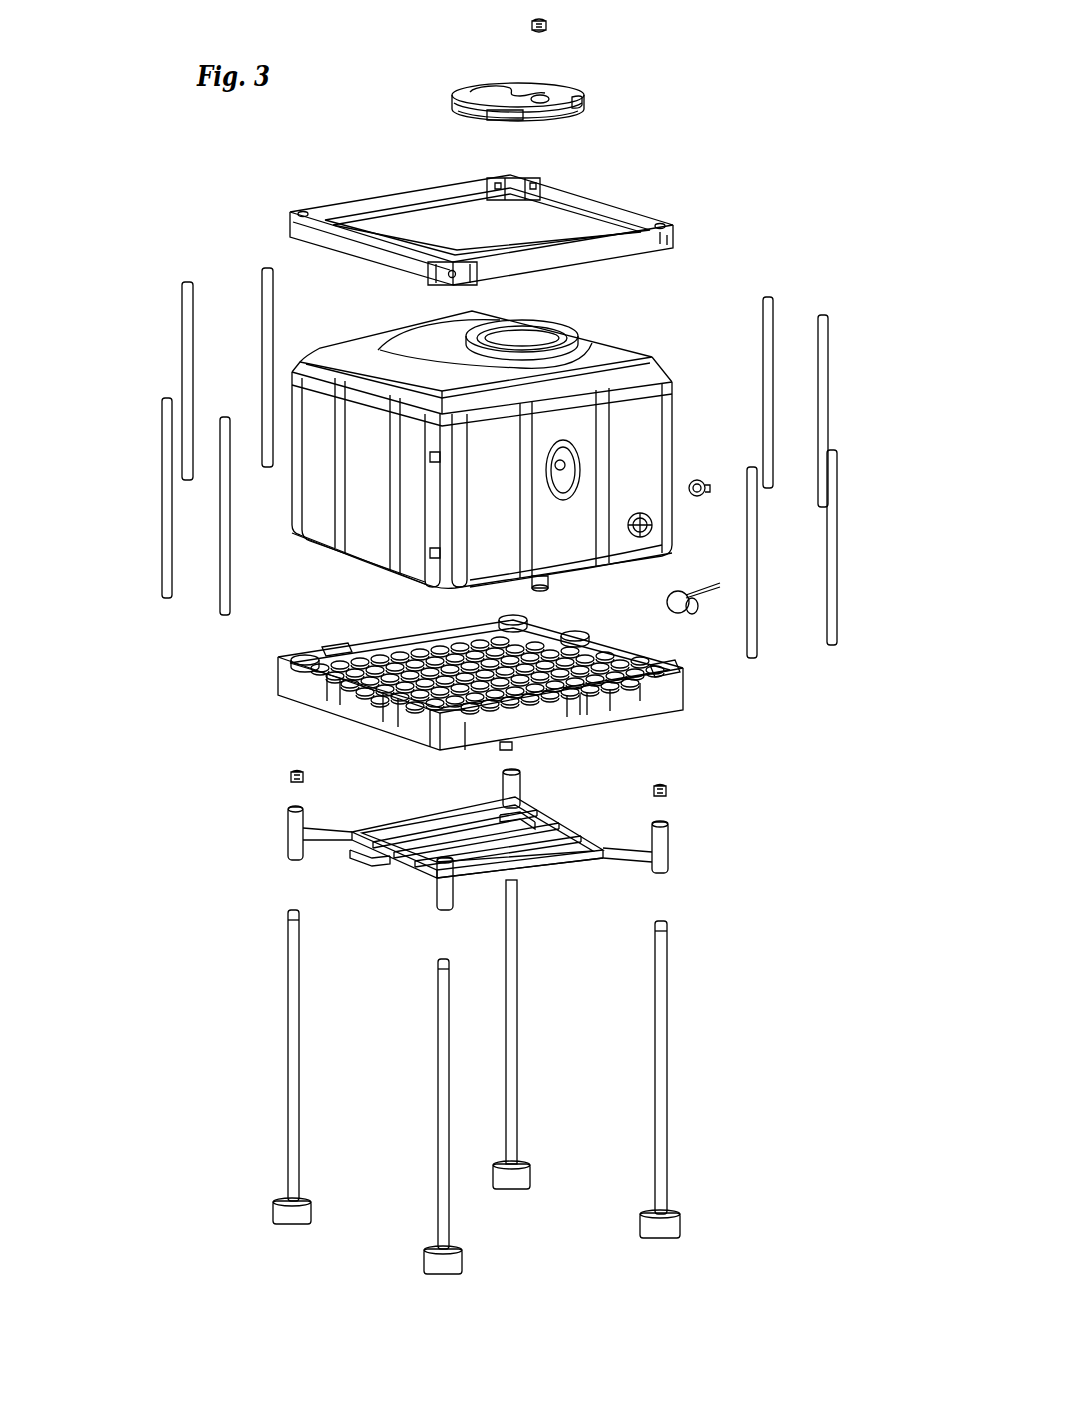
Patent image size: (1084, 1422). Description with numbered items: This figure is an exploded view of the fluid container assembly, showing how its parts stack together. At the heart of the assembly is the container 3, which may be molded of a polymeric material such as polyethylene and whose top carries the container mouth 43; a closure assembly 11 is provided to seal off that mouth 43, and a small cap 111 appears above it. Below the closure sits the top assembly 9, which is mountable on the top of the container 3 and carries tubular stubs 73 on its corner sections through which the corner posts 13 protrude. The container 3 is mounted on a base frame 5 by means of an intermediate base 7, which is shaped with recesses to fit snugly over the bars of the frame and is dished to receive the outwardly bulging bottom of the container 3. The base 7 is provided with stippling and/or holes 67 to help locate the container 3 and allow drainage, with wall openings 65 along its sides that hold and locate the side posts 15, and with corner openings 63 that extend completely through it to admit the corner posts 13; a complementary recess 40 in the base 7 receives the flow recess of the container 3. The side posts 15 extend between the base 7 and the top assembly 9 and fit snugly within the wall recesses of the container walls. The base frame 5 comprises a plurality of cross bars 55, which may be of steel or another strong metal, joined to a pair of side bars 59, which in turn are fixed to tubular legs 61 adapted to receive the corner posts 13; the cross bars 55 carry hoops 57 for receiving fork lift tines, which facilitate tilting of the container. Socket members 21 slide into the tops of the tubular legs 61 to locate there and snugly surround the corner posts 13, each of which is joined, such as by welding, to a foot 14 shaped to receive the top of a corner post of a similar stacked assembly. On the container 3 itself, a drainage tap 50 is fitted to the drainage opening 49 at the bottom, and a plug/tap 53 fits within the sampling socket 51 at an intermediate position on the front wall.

The cap nut 111 is at (548, 25).
The closure assembly 11 is at (582, 105).
The tubular stubs 73 is at (508, 199).
The top assembly 9 is at (618, 207).
The side posts 15 is at (182, 327).
The container mouth 43 is at (560, 322).
The container 3 is at (608, 450).
The sampling socket 51 is at (563, 466).
The plug/tap 53 is at (708, 492).
The drainage opening 49 is at (548, 578).
The drainage tap 50 is at (700, 612).
The base 7 is at (475, 669).
The corner openings 63 is at (510, 617).
The stippling and/or holes 67 is at (338, 650).
The wall openings 65 is at (573, 643).
The complementary recess 40 is at (648, 668).
The socket members 21 is at (285, 775).
The base frame 5 is at (414, 860).
The cross bars 55 is at (567, 830).
The hoops 57 is at (530, 833).
The side bars 59 is at (553, 865).
The tubular legs 61 is at (285, 835).
The corner posts 13 is at (286, 1070).
The foot 14 is at (280, 1225).